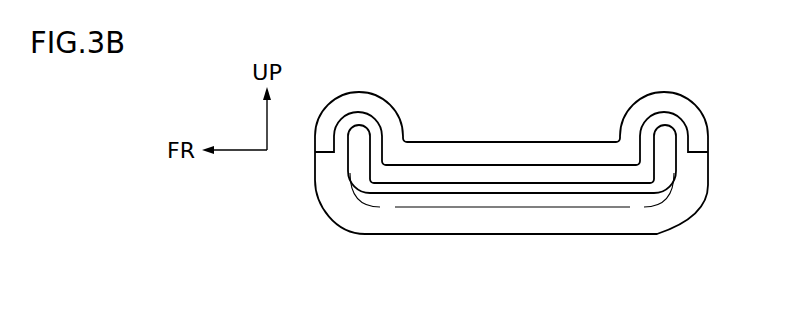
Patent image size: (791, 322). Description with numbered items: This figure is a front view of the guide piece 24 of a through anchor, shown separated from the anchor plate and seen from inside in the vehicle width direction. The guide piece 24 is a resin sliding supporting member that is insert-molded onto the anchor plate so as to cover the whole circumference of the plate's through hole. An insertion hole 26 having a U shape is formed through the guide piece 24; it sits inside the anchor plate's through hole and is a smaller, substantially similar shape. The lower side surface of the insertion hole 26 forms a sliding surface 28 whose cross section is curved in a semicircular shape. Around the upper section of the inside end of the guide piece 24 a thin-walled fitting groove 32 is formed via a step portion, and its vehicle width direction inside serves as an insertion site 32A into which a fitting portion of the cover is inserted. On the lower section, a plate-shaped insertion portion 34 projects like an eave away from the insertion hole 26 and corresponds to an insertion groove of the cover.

The guide piece 24 is at (328, 96).
The insertion hole 26 is at (490, 187).
The sliding surface 28 is at (517, 199).
The fitting groove 32 is at (441, 152).
The insertion site 32A is at (572, 156).
The insertion portion 34 is at (440, 237).